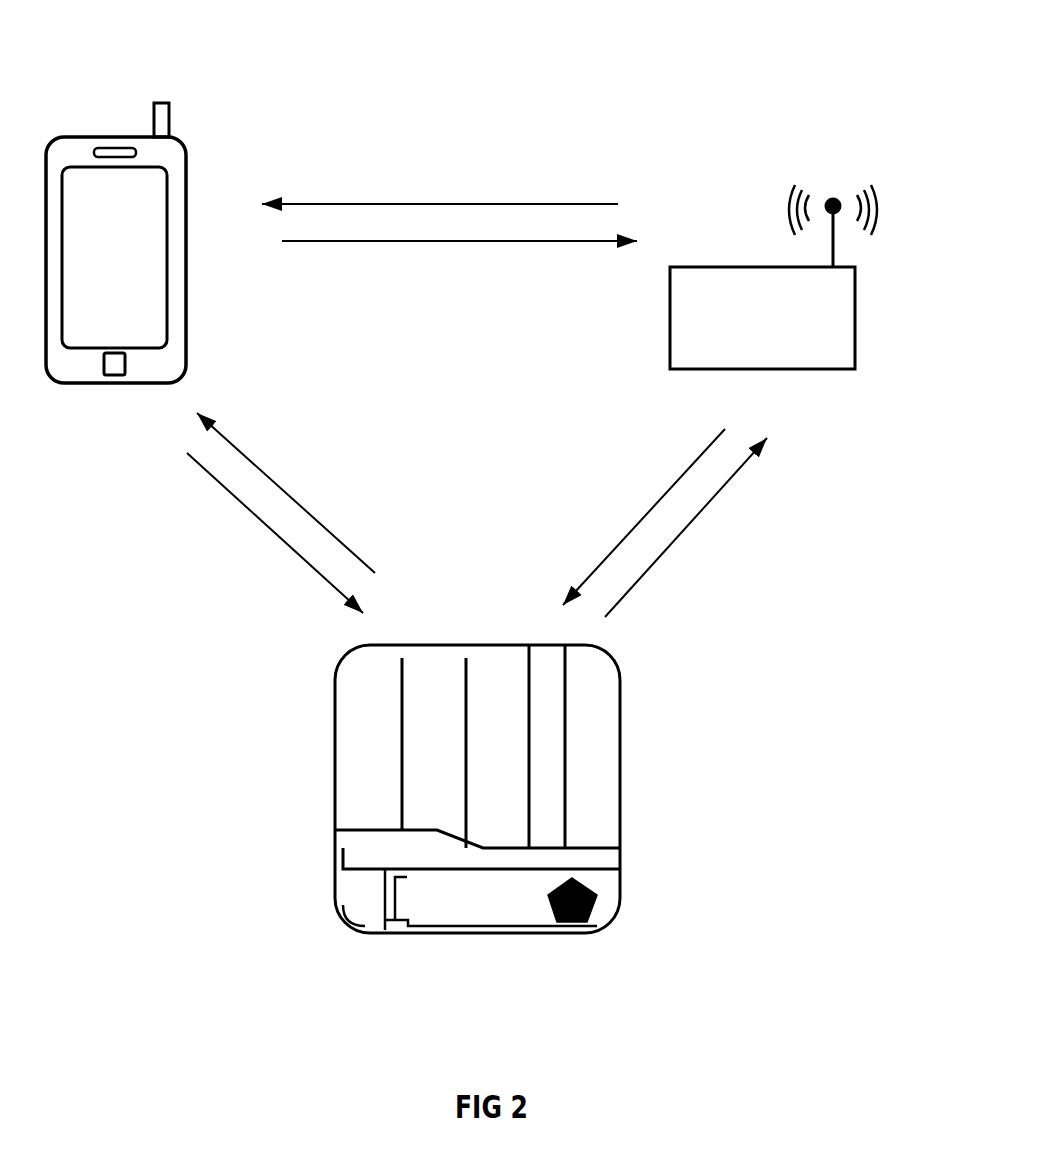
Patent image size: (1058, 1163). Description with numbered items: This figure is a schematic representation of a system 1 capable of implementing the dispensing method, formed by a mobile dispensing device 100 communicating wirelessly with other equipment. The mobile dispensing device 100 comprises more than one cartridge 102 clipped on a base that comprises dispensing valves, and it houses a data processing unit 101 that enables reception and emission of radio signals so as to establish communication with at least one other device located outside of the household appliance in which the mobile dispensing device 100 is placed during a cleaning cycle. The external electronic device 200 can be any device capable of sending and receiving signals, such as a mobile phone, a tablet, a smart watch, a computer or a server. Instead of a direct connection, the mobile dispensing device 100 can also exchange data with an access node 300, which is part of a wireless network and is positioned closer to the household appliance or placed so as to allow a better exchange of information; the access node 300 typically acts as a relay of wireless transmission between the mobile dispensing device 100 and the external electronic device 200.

The system 1 is at (652, 108).
The mobile dispensing device 100 is at (500, 789).
The data processing unit 101 is at (600, 898).
The cartridge 102 is at (590, 753).
The external electronic device 200 is at (187, 155).
The access node 300 is at (810, 372).